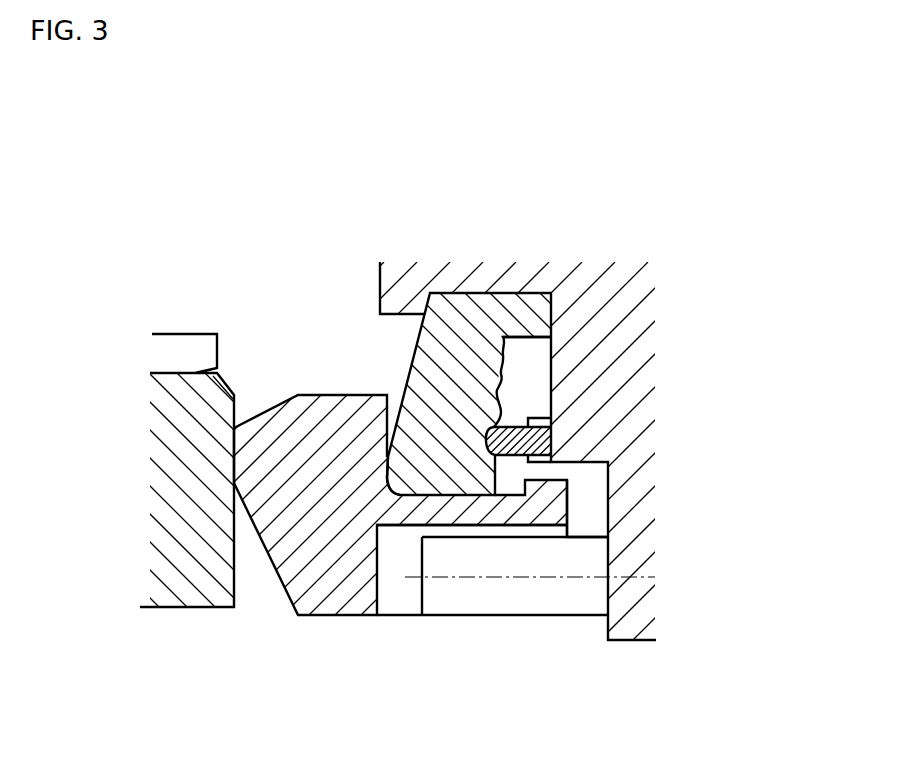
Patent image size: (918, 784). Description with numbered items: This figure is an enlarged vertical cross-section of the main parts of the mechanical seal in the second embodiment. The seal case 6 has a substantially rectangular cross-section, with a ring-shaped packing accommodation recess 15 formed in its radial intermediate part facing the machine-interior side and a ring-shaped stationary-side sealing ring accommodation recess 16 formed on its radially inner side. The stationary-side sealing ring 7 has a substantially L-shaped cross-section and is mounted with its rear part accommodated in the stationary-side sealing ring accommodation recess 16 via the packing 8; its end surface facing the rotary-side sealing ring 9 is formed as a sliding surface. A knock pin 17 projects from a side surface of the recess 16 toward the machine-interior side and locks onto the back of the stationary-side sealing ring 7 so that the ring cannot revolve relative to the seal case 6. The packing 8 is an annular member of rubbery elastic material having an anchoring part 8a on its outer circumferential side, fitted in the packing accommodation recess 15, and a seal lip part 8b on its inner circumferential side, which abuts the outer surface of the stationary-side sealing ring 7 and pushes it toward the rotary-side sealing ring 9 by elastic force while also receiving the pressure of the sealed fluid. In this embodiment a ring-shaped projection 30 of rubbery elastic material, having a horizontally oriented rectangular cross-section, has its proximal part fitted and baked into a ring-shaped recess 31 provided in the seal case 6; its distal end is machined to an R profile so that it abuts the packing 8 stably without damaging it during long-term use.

The seal case 6 is at (608, 330).
The stationary-side sealing ring 7 is at (320, 447).
The packing 8 is at (465, 412).
The anchoring part 8a is at (503, 317).
The seal lip part 8b is at (387, 480).
The rotary-side sealing ring 9 is at (168, 450).
The packing accommodation recess 15 is at (536, 374).
The stationary-side sealing ring accommodation recess 16 is at (620, 503).
The knock pin 17 is at (508, 603).
The ring-shaped projection 30 is at (526, 426).
The ring-shaped recess 31 is at (532, 463).